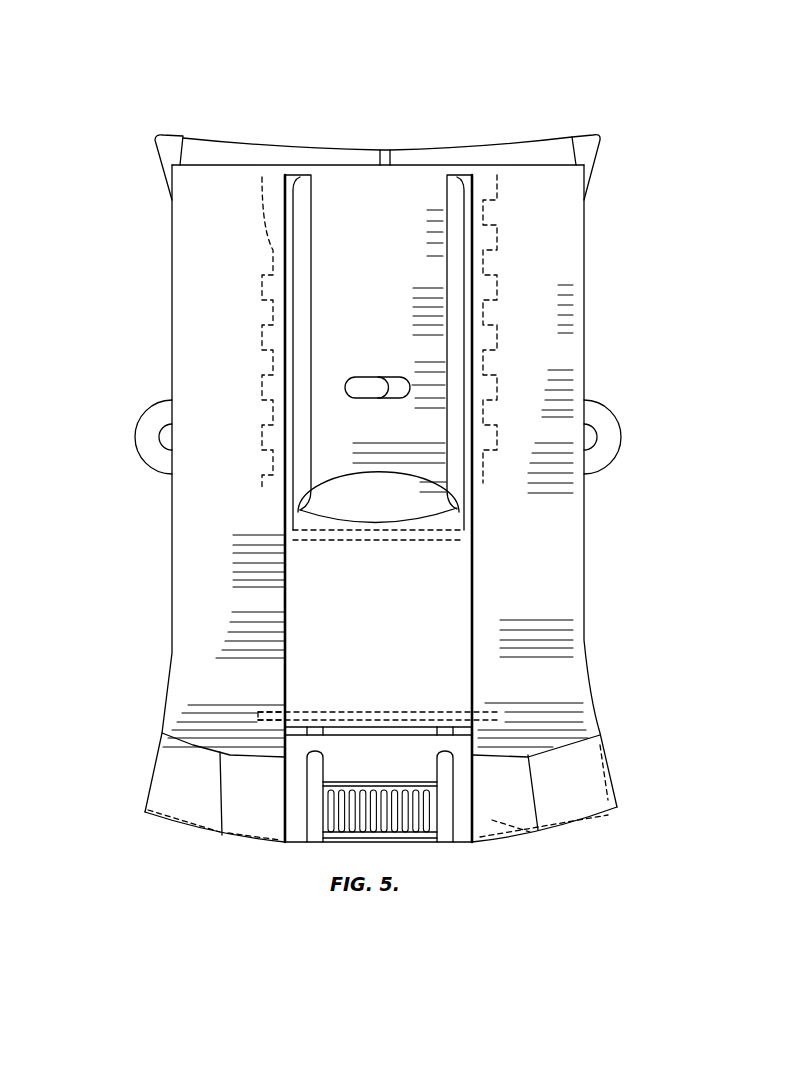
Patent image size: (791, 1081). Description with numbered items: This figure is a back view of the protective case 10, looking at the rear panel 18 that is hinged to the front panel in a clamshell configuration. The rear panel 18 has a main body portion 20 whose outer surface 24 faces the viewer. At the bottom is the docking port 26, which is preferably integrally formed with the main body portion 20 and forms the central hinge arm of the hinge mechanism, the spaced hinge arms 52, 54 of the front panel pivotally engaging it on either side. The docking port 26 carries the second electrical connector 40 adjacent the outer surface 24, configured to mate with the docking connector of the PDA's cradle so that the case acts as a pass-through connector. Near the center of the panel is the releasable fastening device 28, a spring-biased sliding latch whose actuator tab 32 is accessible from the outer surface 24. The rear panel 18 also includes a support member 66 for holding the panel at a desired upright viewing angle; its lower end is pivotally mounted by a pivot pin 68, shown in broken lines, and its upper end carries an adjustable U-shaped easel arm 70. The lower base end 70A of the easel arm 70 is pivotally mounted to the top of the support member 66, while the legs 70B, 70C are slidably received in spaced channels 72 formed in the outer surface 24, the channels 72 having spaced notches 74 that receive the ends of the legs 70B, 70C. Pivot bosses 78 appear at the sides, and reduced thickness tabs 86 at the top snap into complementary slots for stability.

The protective case 10 is at (623, 157).
The rear panel 18 is at (205, 303).
The main body portion 20 is at (178, 534).
The outer surface 24 is at (192, 348).
The docking port 26 is at (463, 832).
The releasable fastening device 28 is at (363, 386).
The actuator tab 32 is at (376, 372).
The second electrical connector 40 is at (335, 812).
The hinge arm 52 is at (500, 820).
The hinge arm 54 is at (248, 810).
The support member 66 is at (435, 615).
The pivot pin 68 is at (450, 707).
The easel arm 70 is at (468, 403).
The lower base end 70A is at (341, 540).
The leg 70B is at (470, 277).
The leg 70C is at (285, 362).
The channels 72 is at (302, 182).
The notches 74 is at (262, 250).
The pivot bosses 78 is at (145, 438).
The reduced thickness tabs 86 is at (625, 0).